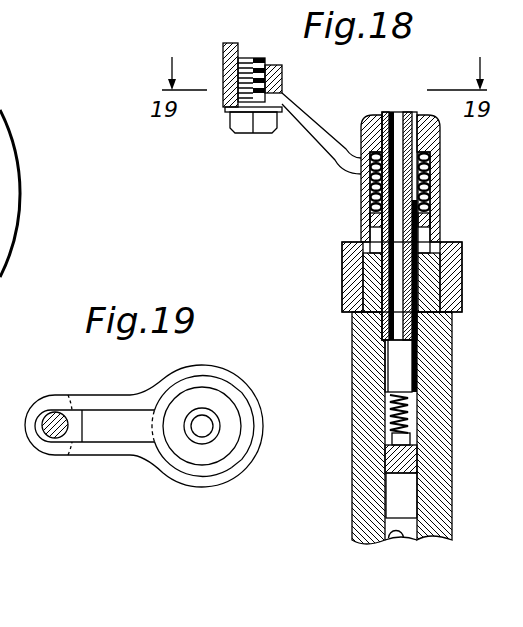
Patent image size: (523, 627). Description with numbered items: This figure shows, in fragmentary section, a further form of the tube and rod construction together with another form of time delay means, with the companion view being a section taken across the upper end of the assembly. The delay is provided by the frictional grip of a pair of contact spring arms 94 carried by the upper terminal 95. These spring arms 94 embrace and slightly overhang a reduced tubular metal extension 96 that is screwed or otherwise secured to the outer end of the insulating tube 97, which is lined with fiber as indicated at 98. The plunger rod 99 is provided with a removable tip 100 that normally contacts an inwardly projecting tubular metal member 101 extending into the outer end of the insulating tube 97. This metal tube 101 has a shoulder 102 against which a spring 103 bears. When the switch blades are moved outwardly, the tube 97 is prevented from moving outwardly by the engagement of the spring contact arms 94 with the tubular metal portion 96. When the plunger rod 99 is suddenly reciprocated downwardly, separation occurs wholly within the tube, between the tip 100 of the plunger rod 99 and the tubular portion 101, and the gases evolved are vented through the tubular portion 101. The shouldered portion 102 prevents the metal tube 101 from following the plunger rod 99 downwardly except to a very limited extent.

In FIG. 19, the contact spring arms 94 is at (195, 476).
In FIG. 18, the upper terminal 95 is at (284, 80).
In FIG. 18, the reduced tubular metal extension 96 is at (361, 203).
In FIG. 19, the reduced tubular metal extension 96 is at (244, 437).
In FIG. 18, the insulating tube 97 is at (352, 377).
In FIG. 18, the fiber lining 98 is at (392, 530).
In FIG. 18, the plunger rod 99 is at (397, 497).
In FIG. 18, the removable tip 100 is at (402, 372).
In FIG. 18, the tubular metal member 101 is at (342, 251).
In FIG. 19, the tubular metal member 101 is at (220, 419).
In FIG. 18, the shoulder 102 is at (427, 218).
In FIG. 18, the spring 103 is at (423, 197).